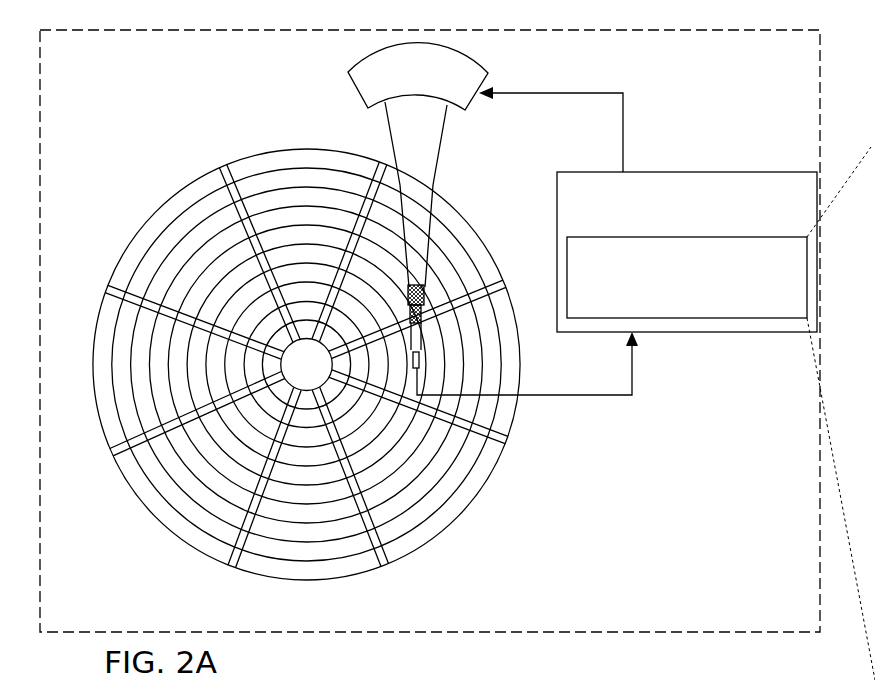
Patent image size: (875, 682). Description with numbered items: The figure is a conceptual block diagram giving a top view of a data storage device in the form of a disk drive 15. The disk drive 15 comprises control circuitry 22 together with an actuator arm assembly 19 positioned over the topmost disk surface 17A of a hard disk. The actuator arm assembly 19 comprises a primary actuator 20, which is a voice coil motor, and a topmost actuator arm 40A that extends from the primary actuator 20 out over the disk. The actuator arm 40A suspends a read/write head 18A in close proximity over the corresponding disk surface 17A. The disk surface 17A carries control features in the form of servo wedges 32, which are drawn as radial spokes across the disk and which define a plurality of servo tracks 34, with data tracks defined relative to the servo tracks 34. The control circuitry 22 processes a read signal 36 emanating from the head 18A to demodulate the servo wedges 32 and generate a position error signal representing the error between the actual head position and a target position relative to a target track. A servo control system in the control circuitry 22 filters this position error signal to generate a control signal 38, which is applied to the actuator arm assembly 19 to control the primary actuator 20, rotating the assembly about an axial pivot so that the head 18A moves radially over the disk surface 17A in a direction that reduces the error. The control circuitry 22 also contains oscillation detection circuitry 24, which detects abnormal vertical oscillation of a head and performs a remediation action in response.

The disk drive 15 is at (750, 638).
The disk surface 17A is at (152, 188).
The read/write head 18A is at (436, 375).
The actuator arm assembly 19 is at (474, 356).
The primary actuator 20 is at (484, 101).
The control circuitry 22 is at (678, 225).
The oscillation detection circuitry 24 is at (678, 308).
The servo wedges 32 is at (401, 590).
The servo tracks 34 is at (310, 172).
The read signal 36 is at (610, 398).
The control signal 38 is at (627, 118).
The actuator arm 40A is at (438, 180).